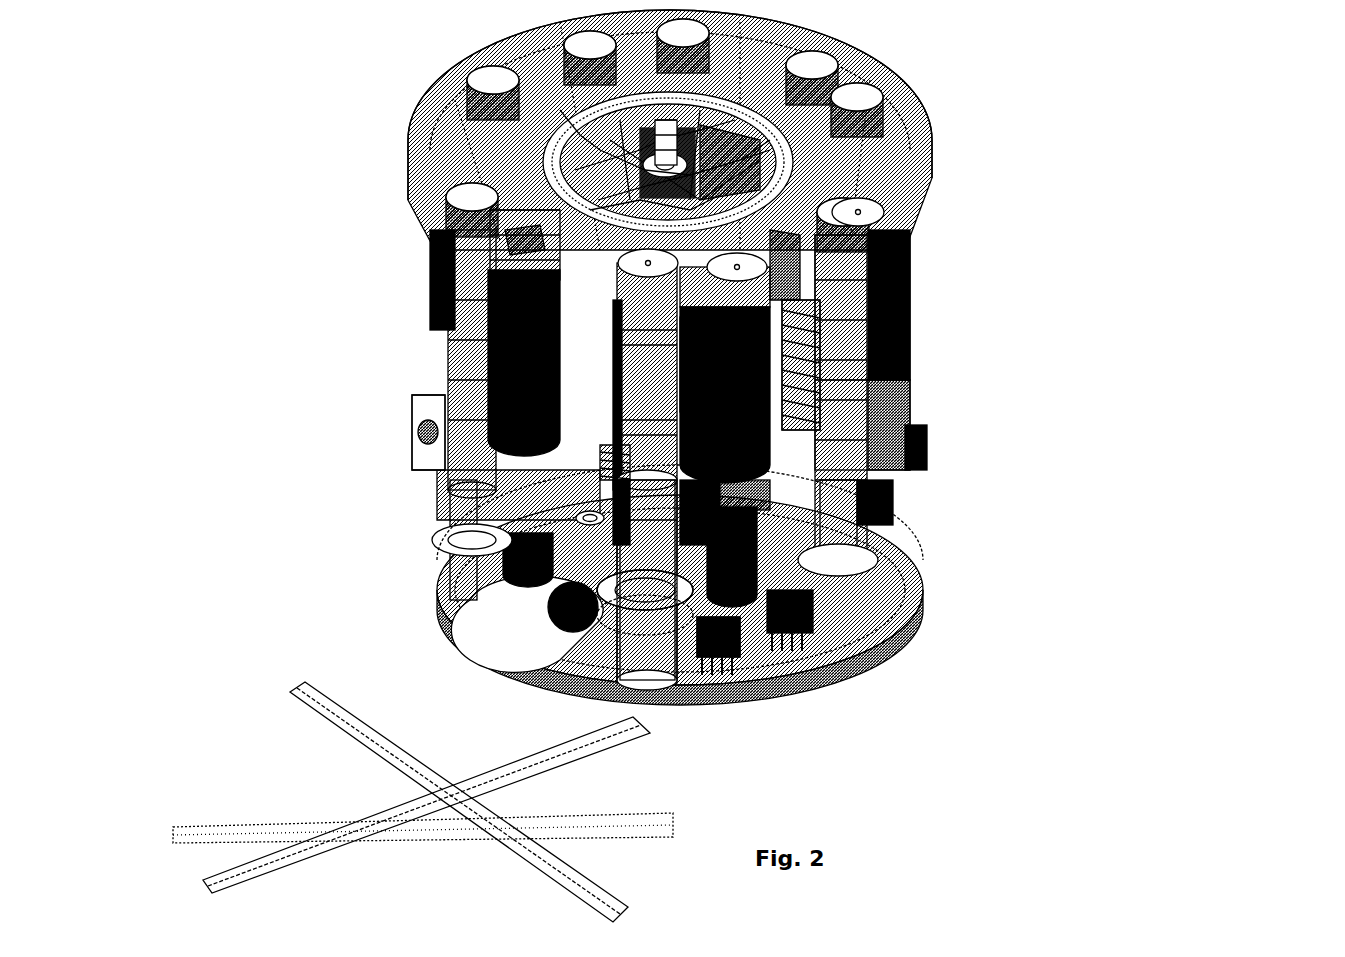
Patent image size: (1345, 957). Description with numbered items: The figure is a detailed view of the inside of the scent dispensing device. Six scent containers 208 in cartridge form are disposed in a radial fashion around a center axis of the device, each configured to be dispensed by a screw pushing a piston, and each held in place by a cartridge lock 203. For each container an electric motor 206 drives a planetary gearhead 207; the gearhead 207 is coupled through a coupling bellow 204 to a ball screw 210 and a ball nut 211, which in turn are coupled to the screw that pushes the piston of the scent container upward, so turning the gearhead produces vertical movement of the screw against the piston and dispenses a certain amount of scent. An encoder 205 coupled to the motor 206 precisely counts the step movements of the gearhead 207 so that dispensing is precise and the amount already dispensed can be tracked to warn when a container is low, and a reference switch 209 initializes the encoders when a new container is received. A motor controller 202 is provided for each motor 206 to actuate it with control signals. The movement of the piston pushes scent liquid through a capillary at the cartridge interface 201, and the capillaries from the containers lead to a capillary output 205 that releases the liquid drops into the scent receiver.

The cartridge interface 201 is at (523, 245).
The motor controller 202 is at (521, 338).
The cartridge lock 203 is at (457, 407).
The coupling bellow 204 is at (609, 463).
The encoder 205 is at (591, 514).
The electric motor 206 is at (909, 279).
The planetary gearhead 207 is at (908, 340).
The scent container 208 is at (775, 395).
The reference switch 209 is at (755, 612).
The ball screw 210 is at (645, 578).
The ball nut 211 is at (652, 634).